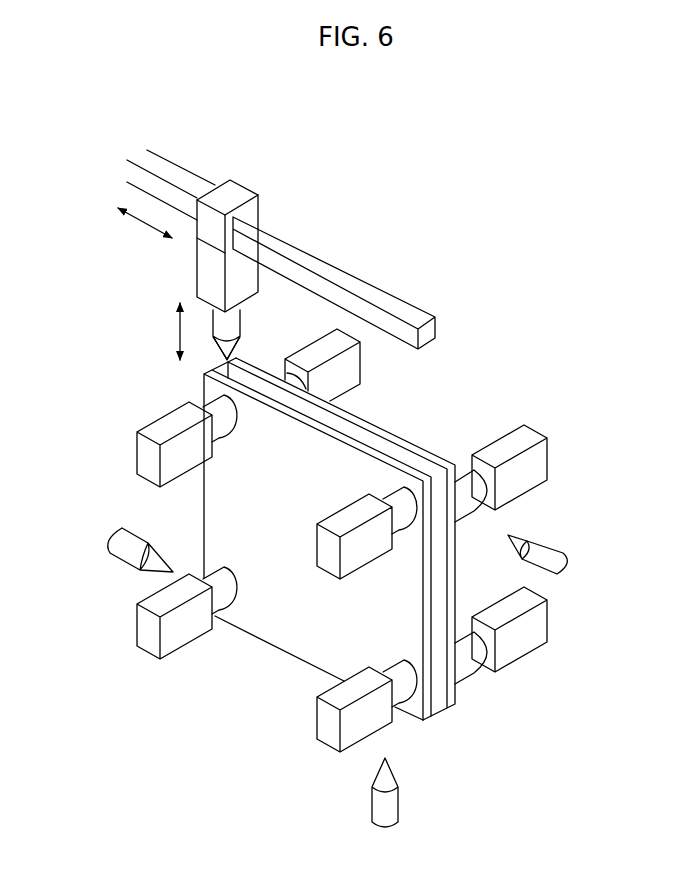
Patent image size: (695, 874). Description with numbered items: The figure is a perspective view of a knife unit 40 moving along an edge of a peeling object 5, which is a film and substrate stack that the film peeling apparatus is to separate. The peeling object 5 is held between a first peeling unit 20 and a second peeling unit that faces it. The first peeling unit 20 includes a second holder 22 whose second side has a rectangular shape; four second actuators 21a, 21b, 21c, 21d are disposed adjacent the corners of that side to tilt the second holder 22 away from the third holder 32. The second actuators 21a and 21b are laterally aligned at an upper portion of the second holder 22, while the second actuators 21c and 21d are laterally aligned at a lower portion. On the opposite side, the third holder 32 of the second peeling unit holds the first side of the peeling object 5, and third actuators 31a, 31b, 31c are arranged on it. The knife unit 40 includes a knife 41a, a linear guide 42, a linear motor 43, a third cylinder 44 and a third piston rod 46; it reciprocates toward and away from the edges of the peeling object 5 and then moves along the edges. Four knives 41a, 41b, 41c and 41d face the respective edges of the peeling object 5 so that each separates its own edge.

The peeling object 5 is at (355, 440).
The first peeling unit 20 is at (115, 517).
The second actuator 21a is at (380, 564).
The second actuator 21b is at (130, 443).
The second actuator 21c is at (312, 722).
The second actuator 21d is at (130, 628).
The second holder 22 is at (245, 625).
The third actuator 31a is at (537, 428).
The third actuator 31b is at (368, 367).
The third actuator 31c is at (552, 621).
The third holder 32 is at (420, 452).
The knife unit 40 is at (143, 247).
The knife 41a is at (220, 348).
The knife 41b is at (392, 803).
The knife 41c is at (562, 565).
The knife 41d is at (118, 532).
The linear guide 42 is at (413, 312).
The linear motor 43 is at (238, 193).
The third cylinder 44 is at (207, 273).
The third piston rod 46 is at (227, 323).